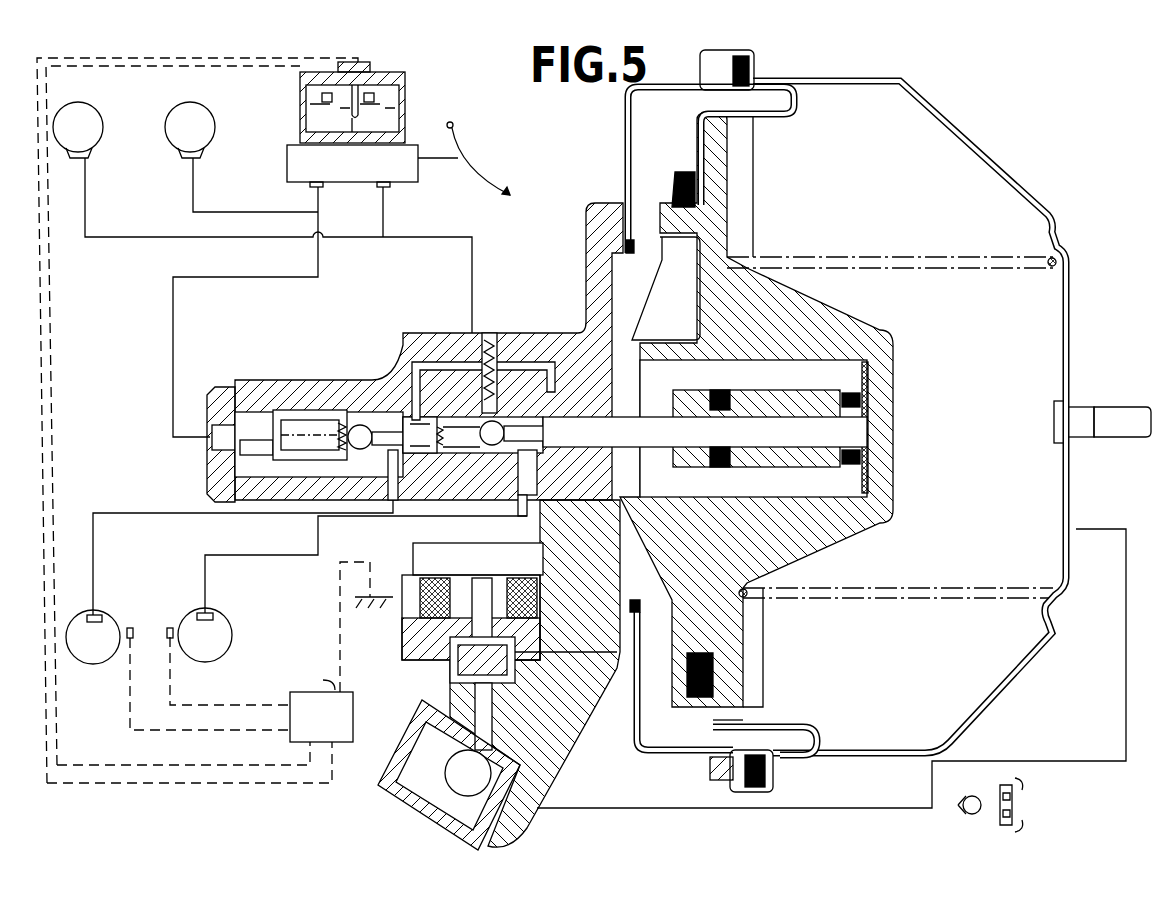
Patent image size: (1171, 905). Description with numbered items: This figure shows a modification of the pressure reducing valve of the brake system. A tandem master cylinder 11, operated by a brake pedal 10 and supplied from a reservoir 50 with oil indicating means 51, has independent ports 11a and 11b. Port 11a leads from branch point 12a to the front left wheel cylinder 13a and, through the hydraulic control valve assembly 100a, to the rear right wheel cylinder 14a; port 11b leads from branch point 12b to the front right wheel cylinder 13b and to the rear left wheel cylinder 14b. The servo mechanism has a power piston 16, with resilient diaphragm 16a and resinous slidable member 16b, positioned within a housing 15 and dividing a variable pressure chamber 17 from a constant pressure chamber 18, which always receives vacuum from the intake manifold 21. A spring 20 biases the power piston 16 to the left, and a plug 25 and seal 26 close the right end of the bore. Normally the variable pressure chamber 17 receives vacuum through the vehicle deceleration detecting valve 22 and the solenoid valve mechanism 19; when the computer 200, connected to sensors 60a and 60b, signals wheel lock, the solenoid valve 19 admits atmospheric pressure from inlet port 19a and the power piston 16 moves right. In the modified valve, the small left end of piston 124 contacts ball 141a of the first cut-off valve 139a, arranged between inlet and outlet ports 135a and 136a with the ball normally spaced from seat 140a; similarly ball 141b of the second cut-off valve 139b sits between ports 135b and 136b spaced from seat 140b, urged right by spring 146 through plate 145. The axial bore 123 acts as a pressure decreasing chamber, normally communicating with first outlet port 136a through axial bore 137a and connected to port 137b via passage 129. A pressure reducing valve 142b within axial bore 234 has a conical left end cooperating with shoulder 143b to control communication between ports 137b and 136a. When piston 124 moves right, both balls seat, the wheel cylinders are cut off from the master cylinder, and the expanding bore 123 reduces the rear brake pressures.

The brake pedal 10 is at (512, 185).
The tandem master cylinder 11 is at (366, 179).
The port 11a is at (385, 188).
The port 11b is at (316, 188).
The branch point 12a is at (387, 237).
The branch point 12b is at (315, 210).
The front left wheel cylinder 13a is at (88, 155).
The front right wheel cylinder 13b is at (198, 155).
The rear right wheel cylinder 14a is at (213, 616).
The rear left wheel cylinder 14b is at (100, 615).
The housing 15 is at (1000, 161).
The power piston 16 is at (763, 726).
The resilient diaphragm 16a is at (817, 722).
The resinous slidable member 16b is at (723, 643).
The variable pressure chamber 17 is at (688, 732).
The constant pressure chamber 18 is at (983, 505).
The solenoid valve mechanism 19 is at (407, 667).
The atmospheric inlet port 19a is at (407, 608).
The spring 20 is at (963, 260).
The intake manifold 21 is at (1013, 800).
The vehicle deceleration detecting valve 22 is at (488, 762).
The plug 25 is at (850, 332).
The seal 26 is at (813, 317).
The reservoir 50 is at (410, 77).
The oil indicating means 51 is at (313, 83).
The sensor 60a is at (170, 628).
The sensor 60b is at (130, 628).
The hydraulic control valve assembly 100a is at (563, 328).
The axial bore 123 is at (613, 450).
The piston 124 is at (827, 425).
The passage 129 is at (550, 382).
The inlet port 135a is at (482, 333).
The inlet port 135b is at (220, 446).
The first outlet port 136a is at (537, 497).
The outlet port 136b is at (397, 500).
The axial bore 137a is at (547, 430).
The port 137b is at (420, 397).
The first cut-off valve 139a is at (513, 450).
The second cut-off valve 139b is at (357, 423).
The seat 140a is at (492, 338).
The seat 140b is at (373, 430).
The ball 141a is at (525, 450).
The ball 141b is at (362, 452).
The pressure reducing valve 142b is at (420, 440).
The shoulder 143b is at (407, 413).
The plate 145 is at (287, 413).
The spring 146 is at (265, 413).
The computer 200 is at (347, 733).
The axial bore 234 is at (327, 460).